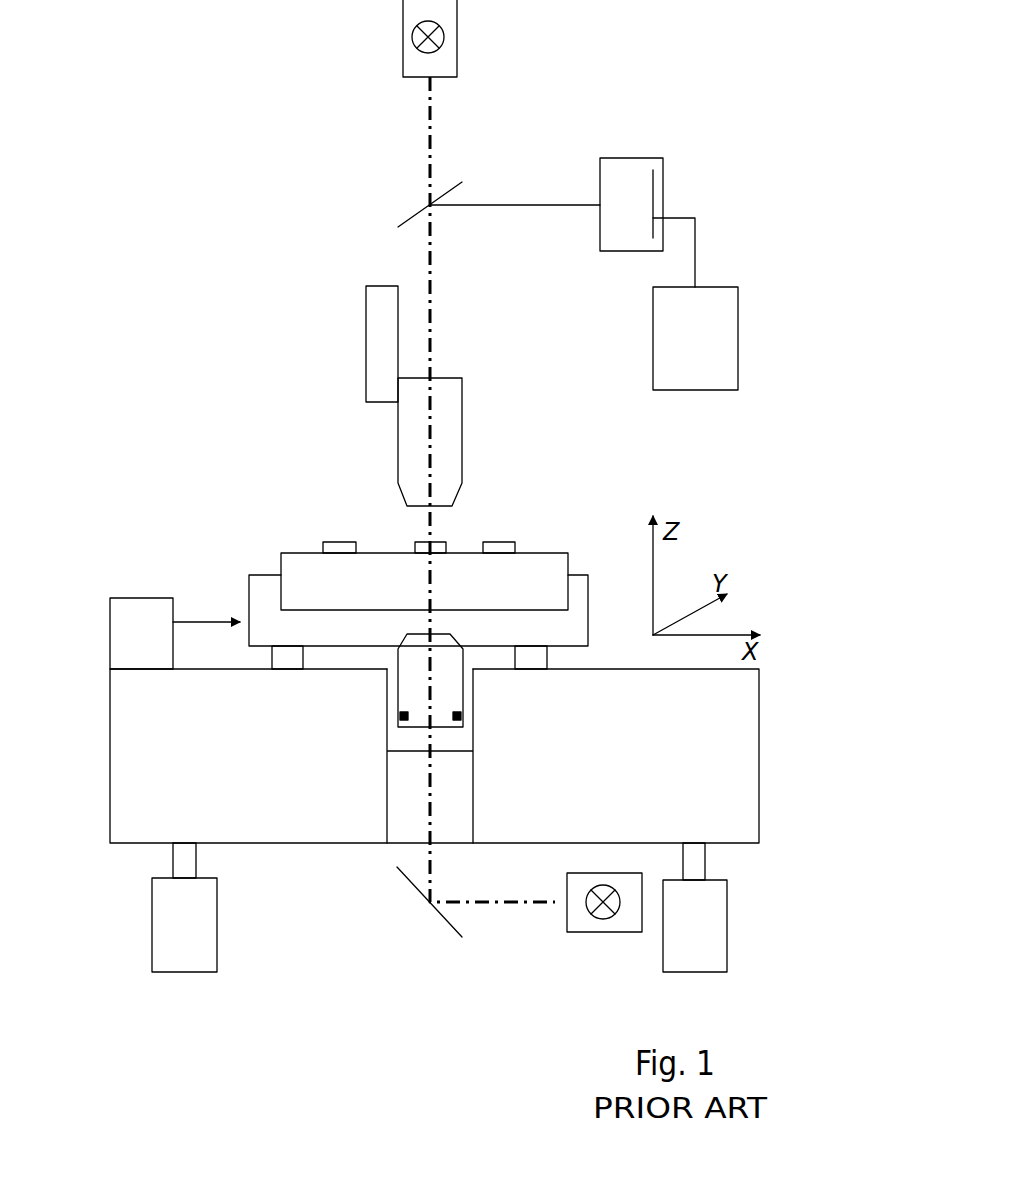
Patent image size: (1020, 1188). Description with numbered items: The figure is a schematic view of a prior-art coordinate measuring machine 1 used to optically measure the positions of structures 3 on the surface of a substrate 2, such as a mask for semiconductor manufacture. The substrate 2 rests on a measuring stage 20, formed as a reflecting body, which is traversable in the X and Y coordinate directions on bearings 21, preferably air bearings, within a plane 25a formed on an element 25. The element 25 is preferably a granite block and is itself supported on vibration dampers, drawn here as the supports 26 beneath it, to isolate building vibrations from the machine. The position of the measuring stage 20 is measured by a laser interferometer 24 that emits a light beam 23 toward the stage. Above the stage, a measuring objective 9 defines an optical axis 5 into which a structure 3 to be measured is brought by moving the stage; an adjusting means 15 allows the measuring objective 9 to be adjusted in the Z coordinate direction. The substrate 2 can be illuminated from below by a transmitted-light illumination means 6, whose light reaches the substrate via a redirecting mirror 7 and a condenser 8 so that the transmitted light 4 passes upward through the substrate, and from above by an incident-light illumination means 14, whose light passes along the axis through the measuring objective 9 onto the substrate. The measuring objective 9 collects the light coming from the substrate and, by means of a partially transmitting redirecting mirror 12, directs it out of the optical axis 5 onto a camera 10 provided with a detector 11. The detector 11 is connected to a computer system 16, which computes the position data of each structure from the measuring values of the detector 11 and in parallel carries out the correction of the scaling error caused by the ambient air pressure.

The coordinate measuring machine 1 is at (252, 459).
The substrate 2 is at (302, 563).
The structures 3 is at (442, 540).
The infrared light 4 is at (430, 691).
The optical axis 5 is at (430, 342).
The transmitted-light illumination means 6 is at (585, 933).
The redirecting mirror 7 is at (450, 927).
The condenser 8 is at (408, 691).
The measuring objective 9 is at (408, 435).
The camera 10 is at (622, 252).
The detector 11 is at (655, 192).
The partially transmitting redirecting mirror 12 is at (415, 208).
The incident-light illumination means 14 is at (403, 23).
The adjusting means 15 is at (376, 332).
The computer system 16 is at (655, 343).
The measuring stage 20 is at (577, 623).
The bearings 21 is at (292, 657).
The light beam 23 is at (220, 620).
The laser interferometer 24 is at (132, 620).
The element 25 is at (130, 773).
The plane 25a is at (622, 670).
The support legs 26 is at (163, 937).